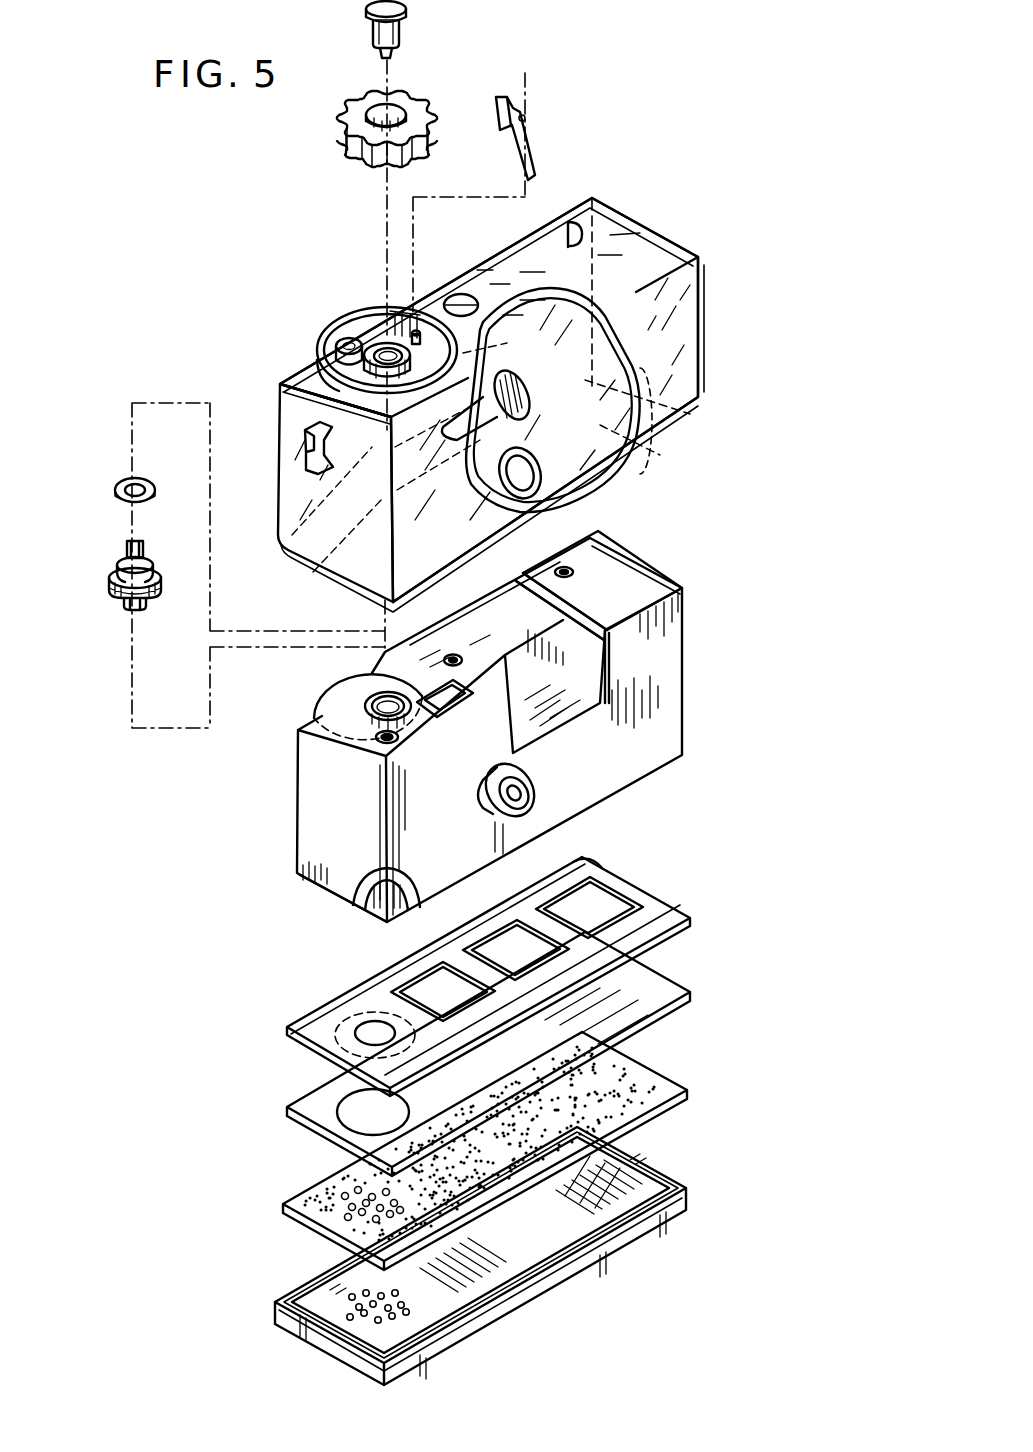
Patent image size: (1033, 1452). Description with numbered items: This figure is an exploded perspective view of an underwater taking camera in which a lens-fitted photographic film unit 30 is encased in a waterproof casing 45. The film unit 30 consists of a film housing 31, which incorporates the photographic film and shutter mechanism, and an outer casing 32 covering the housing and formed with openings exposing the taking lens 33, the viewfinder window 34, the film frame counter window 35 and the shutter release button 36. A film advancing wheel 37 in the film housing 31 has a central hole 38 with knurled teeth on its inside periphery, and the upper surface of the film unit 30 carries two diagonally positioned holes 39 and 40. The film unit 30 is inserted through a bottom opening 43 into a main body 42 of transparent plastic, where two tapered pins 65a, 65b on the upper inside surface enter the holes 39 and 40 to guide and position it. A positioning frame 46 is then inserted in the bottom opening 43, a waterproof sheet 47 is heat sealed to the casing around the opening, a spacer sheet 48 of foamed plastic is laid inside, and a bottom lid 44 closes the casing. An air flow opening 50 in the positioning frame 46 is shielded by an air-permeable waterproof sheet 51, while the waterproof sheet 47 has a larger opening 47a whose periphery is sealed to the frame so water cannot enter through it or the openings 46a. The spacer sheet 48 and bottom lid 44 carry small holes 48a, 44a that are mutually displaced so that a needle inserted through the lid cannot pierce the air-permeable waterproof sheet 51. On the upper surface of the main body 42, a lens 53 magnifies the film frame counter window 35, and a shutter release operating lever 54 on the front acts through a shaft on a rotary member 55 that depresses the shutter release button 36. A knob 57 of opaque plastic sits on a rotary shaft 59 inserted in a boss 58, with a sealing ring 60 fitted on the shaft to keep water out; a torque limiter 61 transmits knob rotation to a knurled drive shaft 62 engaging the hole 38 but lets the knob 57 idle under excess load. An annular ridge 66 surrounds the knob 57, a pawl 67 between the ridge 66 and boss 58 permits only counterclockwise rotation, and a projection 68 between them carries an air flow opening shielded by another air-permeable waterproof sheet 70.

The lens-fitted photographic film unit 30 is at (713, 695).
The film housing 31 is at (373, 908).
The outer casing 32 is at (416, 880).
The taking lens 33 is at (533, 783).
The viewfinder window 34 is at (582, 668).
The film frame counter window 35 is at (455, 654).
The shutter release button 36 is at (463, 700).
The film advancing wheel 37 is at (316, 705).
The hole 38 is at (365, 728).
The hole 39 is at (400, 741).
The hole 40 is at (568, 566).
The main body 42 is at (615, 223).
The bottom opening 43 is at (648, 439).
The bottom lid 44 is at (567, 1282).
The small holes 44a is at (347, 1308).
The waterproof casing 45 is at (748, 328).
The positioning frame 46 is at (658, 890).
The openings 46a is at (597, 884).
The waterproof sheet 47 is at (667, 989).
The opening 47a is at (357, 1112).
The spacer sheet 48 is at (660, 1072).
The small holes 48a is at (345, 1198).
The air flow opening 50 is at (363, 1022).
The air-permeable waterproof sheet 51 is at (340, 1020).
The lens 53 is at (479, 300).
The shutter release operating lever 54 is at (468, 456).
The rotary member 55 is at (505, 360).
The knob 57 is at (413, 110).
The boss 58 is at (378, 338).
The rotary shaft 59 is at (128, 542).
The washer 60 is at (122, 480).
The torque limiter 61 is at (112, 563).
The drive shaft 62 is at (145, 604).
The tapered pin 65a is at (540, 233).
The tapered pin 65b is at (320, 471).
The annular ridge 66 is at (340, 403).
The pawl 67 is at (500, 127).
The projection 68 is at (325, 352).
The air-permeable waterproof sheet 70 is at (340, 337).